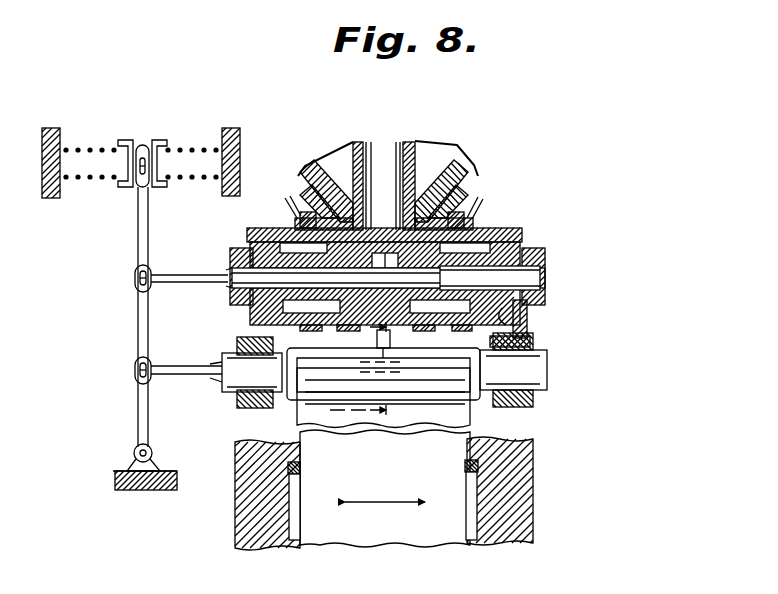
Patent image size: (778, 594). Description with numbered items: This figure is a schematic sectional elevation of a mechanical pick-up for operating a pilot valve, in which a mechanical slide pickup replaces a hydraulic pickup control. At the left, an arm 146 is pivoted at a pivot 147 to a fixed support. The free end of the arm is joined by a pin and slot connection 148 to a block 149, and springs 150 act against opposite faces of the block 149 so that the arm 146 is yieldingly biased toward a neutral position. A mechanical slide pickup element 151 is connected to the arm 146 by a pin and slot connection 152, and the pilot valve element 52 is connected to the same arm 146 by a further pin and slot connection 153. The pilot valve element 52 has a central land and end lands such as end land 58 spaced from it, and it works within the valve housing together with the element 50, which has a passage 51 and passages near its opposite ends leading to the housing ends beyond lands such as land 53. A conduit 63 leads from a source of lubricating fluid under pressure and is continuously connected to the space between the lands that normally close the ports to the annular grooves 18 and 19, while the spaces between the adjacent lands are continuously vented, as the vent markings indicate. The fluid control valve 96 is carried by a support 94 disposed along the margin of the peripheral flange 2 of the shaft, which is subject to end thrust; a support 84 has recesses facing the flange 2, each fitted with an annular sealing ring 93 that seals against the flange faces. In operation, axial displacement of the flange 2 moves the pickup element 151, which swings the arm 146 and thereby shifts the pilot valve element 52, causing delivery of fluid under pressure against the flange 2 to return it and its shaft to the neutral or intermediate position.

The peripheral flange 2 is at (392, 465).
The annular groove 18 is at (342, 226).
The annular groove 19 is at (370, 214).
The valve element 50 is at (382, 266).
The passage 51 is at (392, 268).
The pilot valve element 52 is at (185, 272).
The land 53 is at (520, 325).
The end land 58 is at (532, 275).
The conduit 63 is at (392, 169).
The support 84 is at (245, 526).
The annular sealing ring 93 is at (300, 470).
The support 94 is at (530, 344).
The fluid control valve 96 is at (486, 213).
The arm 146 is at (138, 418).
The pivot 147 is at (134, 453).
The pin and slot connection 148 is at (148, 160).
The block 149 is at (130, 140).
The springs 150 is at (90, 143).
The mechanical slide pickup element 151 is at (230, 392).
The pin and slot connection 152 is at (135, 370).
The pin and slot connection 153 is at (135, 279).